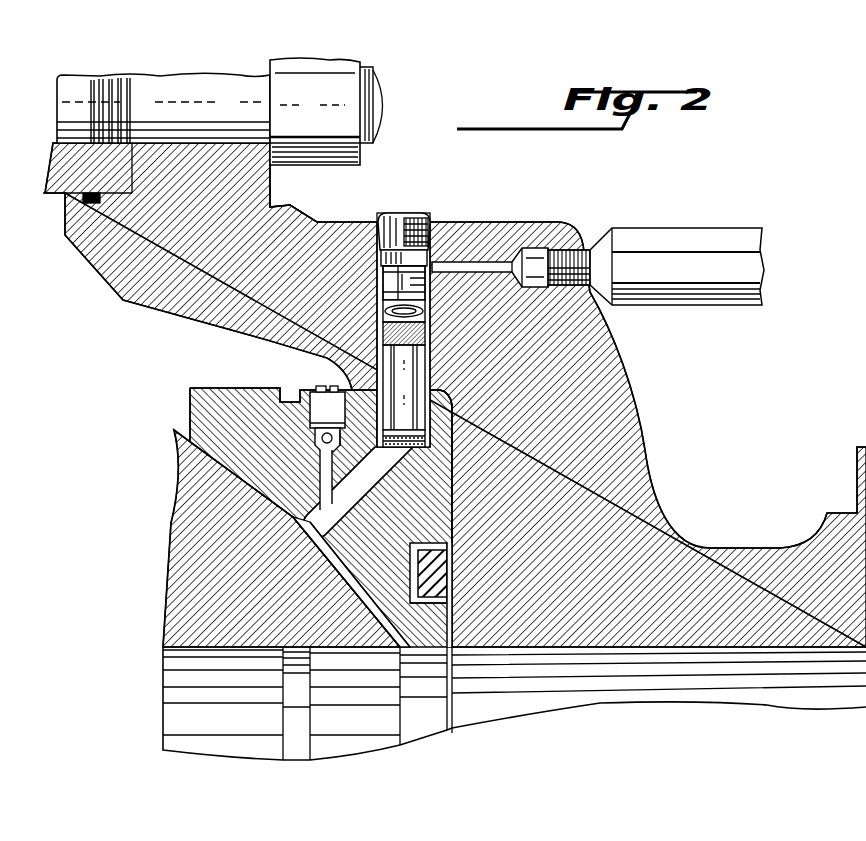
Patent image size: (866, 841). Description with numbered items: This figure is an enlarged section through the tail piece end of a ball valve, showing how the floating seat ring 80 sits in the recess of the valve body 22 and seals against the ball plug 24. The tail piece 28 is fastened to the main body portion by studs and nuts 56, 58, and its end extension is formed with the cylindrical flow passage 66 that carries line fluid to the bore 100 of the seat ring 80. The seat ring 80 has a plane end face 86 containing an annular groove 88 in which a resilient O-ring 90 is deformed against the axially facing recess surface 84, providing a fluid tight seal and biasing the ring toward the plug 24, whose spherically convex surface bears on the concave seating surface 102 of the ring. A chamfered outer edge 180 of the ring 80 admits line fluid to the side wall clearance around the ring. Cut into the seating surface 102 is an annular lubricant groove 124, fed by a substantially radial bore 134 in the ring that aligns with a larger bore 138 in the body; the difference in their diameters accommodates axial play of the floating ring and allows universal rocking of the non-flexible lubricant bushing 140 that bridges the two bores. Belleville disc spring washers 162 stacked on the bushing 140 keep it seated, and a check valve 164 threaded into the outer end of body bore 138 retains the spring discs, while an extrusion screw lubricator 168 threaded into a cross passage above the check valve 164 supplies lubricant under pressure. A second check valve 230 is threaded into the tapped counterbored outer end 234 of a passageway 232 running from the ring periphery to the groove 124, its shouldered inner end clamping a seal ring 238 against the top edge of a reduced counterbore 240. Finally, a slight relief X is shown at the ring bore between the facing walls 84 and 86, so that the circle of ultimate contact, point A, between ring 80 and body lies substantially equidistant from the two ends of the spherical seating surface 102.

The valve body 22 is at (108, 274).
The ball plug 24 is at (162, 614).
The tail piece 28 is at (318, 238).
The studs 56 is at (242, 88).
The nuts 58 is at (320, 80).
The flow passage 66 is at (798, 658).
The seat ring 80 is at (208, 390).
The recess surface 84 is at (452, 442).
The end face 86 is at (453, 499).
The annular groove 88 is at (455, 552).
The O-ring 90 is at (455, 586).
The bore 100 is at (428, 641).
The seating surface 102 is at (272, 508).
The lubricant groove 124 is at (346, 535).
The radial bore 134 is at (430, 382).
The body bore 138 is at (433, 356).
The lubricant bushing 140 is at (392, 372).
The disc spring washers 162 is at (430, 318).
The check valve 164 is at (430, 292).
The extrusion screw lubricator 168 is at (665, 240).
The chamfered outer edge 180 is at (455, 395).
The check valve 230 is at (310, 414).
The passageway 232 is at (316, 452).
The counterbored outer end 234 is at (344, 390).
The seal ring 238 is at (318, 436).
The reduced counterbore 240 is at (340, 444).
The point of ultimate contact A is at (452, 403).
The relief X is at (428, 633).